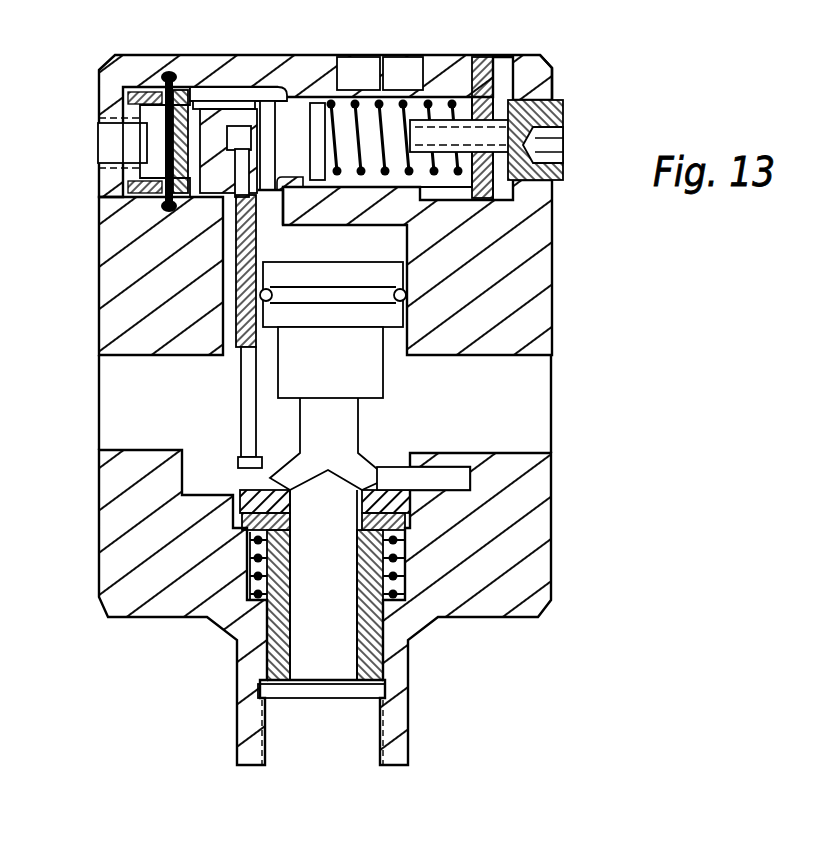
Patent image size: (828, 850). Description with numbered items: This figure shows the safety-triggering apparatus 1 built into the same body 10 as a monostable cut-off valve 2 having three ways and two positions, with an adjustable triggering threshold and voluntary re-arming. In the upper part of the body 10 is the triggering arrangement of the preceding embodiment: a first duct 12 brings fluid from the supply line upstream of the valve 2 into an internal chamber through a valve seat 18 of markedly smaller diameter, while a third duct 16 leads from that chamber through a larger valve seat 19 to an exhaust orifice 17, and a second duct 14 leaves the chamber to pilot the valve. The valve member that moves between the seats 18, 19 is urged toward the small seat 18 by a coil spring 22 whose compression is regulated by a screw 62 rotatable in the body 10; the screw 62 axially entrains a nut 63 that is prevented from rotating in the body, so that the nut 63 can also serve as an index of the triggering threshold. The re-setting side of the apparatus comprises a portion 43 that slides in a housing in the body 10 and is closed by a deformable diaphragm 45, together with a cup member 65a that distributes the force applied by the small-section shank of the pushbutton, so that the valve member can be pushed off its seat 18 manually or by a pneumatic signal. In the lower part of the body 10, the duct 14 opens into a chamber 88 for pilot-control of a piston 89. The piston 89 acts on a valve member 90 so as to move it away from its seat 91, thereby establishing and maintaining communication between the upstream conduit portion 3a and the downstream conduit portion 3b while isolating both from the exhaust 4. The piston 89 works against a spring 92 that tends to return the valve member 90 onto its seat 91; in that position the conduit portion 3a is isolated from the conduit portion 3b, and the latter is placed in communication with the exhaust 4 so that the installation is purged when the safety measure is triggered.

The apparatus 1 is at (567, 76).
The cut-off valve 2 is at (567, 512).
The conduit portion 3a is at (113, 403).
The conduit portion 3b is at (538, 408).
The exhaust 4 is at (300, 744).
The body 10 is at (267, 68).
The first duct 12 is at (234, 270).
The second duct 14 is at (234, 258).
The third duct 16 is at (290, 222).
The exhaust orifice 17 is at (357, 78).
The valve seat 18 is at (226, 210).
The valve seat 19 is at (300, 58).
The coil spring 22 is at (443, 98).
The portion 43 is at (135, 170).
The deformable diaphragm 45 is at (182, 74).
The screw 62 is at (560, 100).
The nut 63 is at (491, 58).
The cup member 65a is at (135, 137).
The chamber 88 is at (380, 243).
The piston 89 is at (368, 381).
The valve member 90 is at (255, 487).
The seat 91 is at (404, 464).
The spring 92 is at (407, 560).